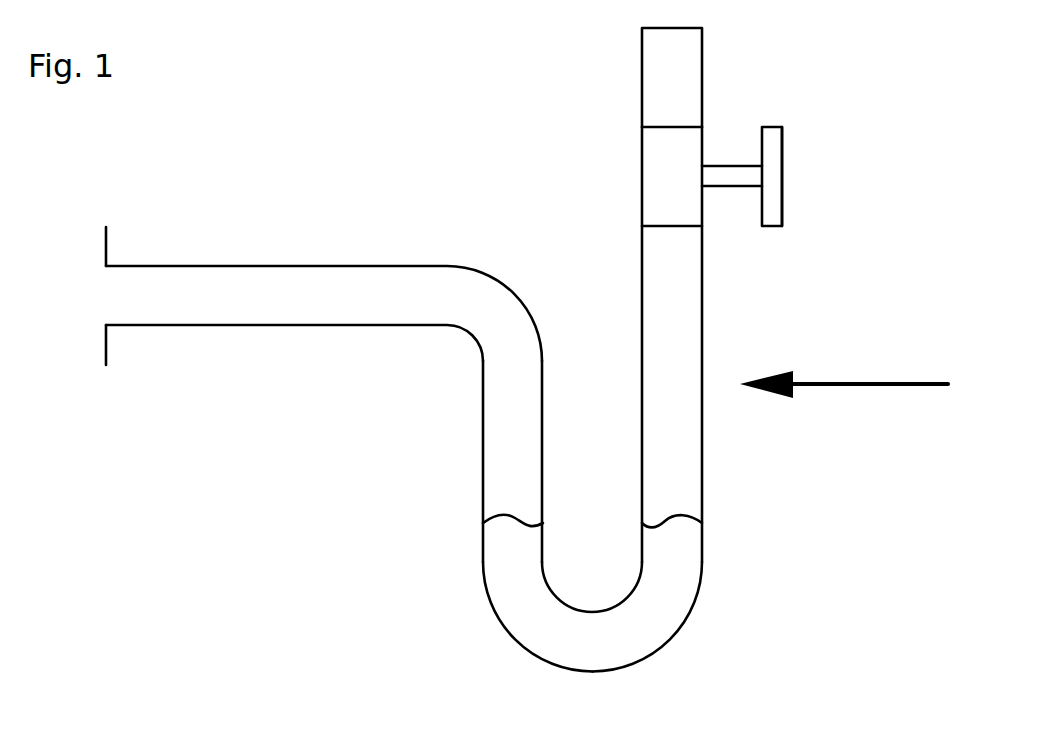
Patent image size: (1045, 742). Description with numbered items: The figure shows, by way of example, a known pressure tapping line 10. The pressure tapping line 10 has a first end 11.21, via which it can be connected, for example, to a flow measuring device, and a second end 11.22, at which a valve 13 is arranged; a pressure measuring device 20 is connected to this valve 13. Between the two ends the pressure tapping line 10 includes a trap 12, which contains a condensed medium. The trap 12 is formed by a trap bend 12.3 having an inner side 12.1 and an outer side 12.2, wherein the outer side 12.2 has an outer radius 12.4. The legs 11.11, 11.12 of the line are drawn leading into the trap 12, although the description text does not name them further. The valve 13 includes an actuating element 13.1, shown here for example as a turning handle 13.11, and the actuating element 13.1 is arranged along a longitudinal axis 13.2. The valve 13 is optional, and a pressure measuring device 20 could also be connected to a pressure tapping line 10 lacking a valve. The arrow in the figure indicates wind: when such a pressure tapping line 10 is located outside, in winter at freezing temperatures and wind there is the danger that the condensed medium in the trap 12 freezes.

The pressure tapping line 10 is at (383, 263).
The first leg of the siphon tube 11.11 is at (385, 383).
The second leg of the siphon tube 11.12 is at (722, 423).
The first end 11.21 is at (146, 365).
The second end 11.22 is at (720, 265).
The trap 12 is at (574, 617).
The inner side 12.1 is at (623, 603).
The outer side 12.2 is at (483, 620).
The trap bend 12.3 is at (465, 602).
The outer radius 12.4 is at (592, 563).
The valve 13 is at (622, 167).
The actuating element 13.1 is at (800, 167).
The turning handle 13.11 is at (800, 186).
The longitudinal axis 13.2 is at (792, 176).
The pressure measuring device 20 is at (720, 67).